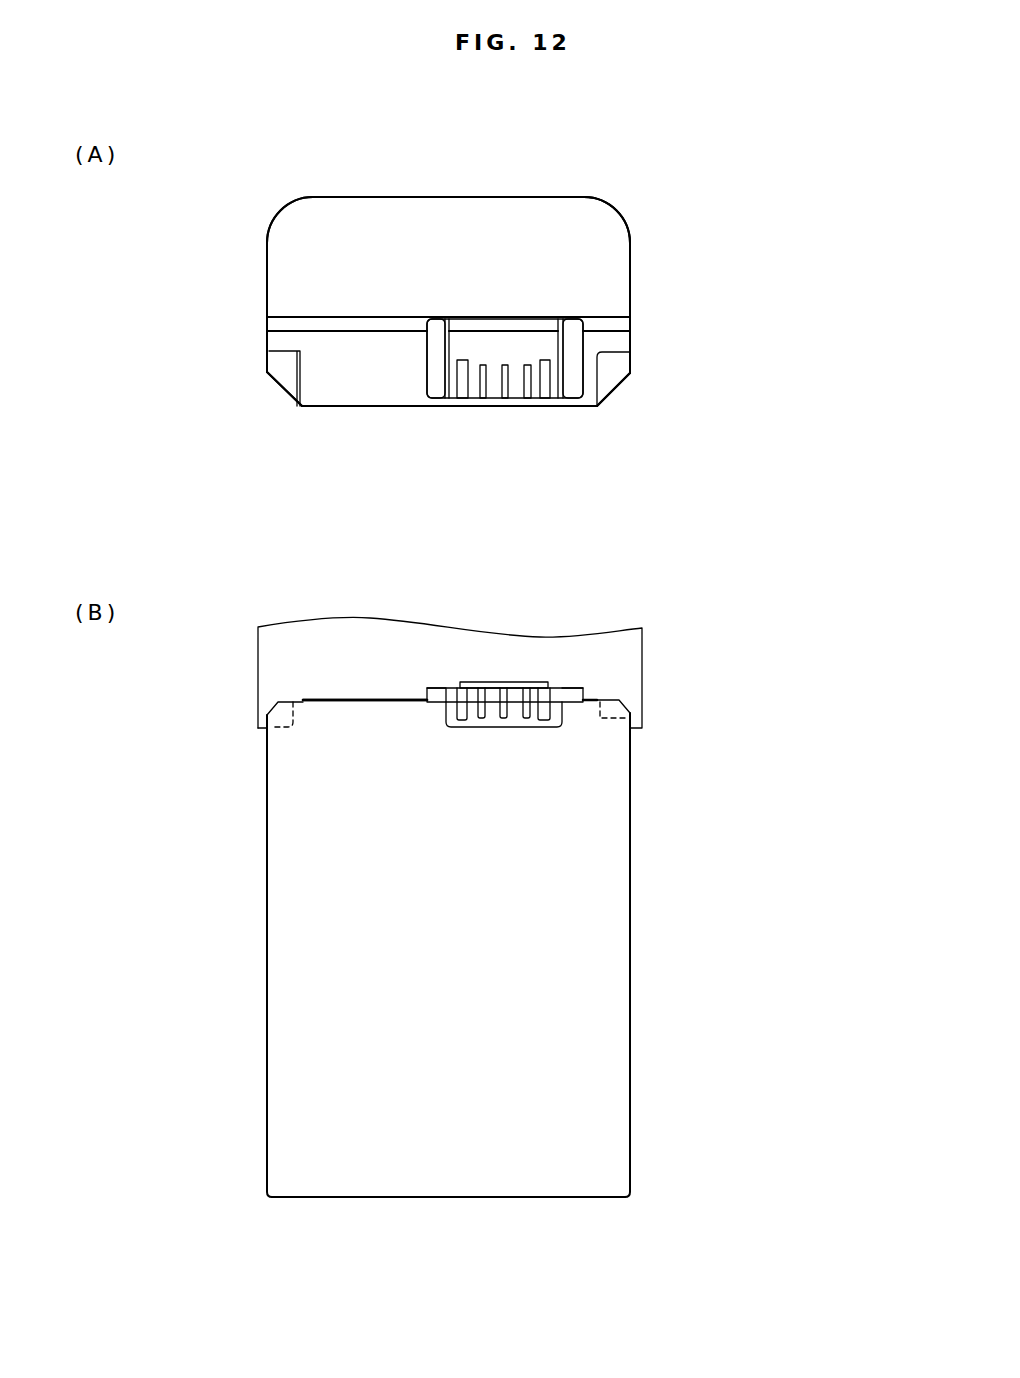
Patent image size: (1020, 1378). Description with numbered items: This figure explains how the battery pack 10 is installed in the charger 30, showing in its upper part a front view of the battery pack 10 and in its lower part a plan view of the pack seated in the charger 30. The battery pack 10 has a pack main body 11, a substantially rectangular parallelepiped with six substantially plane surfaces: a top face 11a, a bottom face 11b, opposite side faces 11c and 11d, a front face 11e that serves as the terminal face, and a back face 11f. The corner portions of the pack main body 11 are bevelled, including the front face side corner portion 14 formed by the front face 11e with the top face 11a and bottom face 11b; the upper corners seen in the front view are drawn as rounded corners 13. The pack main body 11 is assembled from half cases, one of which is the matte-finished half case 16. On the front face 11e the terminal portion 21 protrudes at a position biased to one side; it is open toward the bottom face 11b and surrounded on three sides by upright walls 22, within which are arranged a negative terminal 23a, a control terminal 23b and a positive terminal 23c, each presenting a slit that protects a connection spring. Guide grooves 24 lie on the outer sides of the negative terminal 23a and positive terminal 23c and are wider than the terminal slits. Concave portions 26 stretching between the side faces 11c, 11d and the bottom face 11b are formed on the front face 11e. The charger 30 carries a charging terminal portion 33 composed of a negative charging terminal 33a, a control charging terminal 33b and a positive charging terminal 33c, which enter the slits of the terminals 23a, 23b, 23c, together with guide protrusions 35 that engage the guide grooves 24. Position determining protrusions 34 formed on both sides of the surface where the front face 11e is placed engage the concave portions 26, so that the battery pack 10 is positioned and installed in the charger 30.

The battery pack 10 is at (522, 192).
The pack main body 11 is at (611, 946).
The top face 11a is at (447, 196).
The bottom face 11b is at (346, 408).
The side face 11c is at (631, 287).
The side face 11d is at (267, 270).
The front face 11e is at (603, 247).
The back face 11f is at (423, 1200).
The rounded corner 13 is at (275, 210).
The front face side corner portion 14 is at (273, 397).
The half case 16 is at (273, 373).
The terminal portion 21 is at (411, 410).
The upright walls 22 is at (575, 327).
The negative terminal 23a is at (483, 399).
The control terminal 23b is at (505, 399).
The positive terminal 23c is at (528, 399).
The guide grooves 24 is at (462, 399).
The concave portions 26 is at (612, 371).
The charger 30 is at (655, 654).
The charging terminal portion 33 is at (527, 680).
The negative charging terminal 33a is at (482, 688).
The control charging terminal 33b is at (508, 688).
The positive charging terminal 33c is at (543, 688).
The position determining protrusions 34 is at (266, 713).
The guide protrusions 35 is at (460, 688).